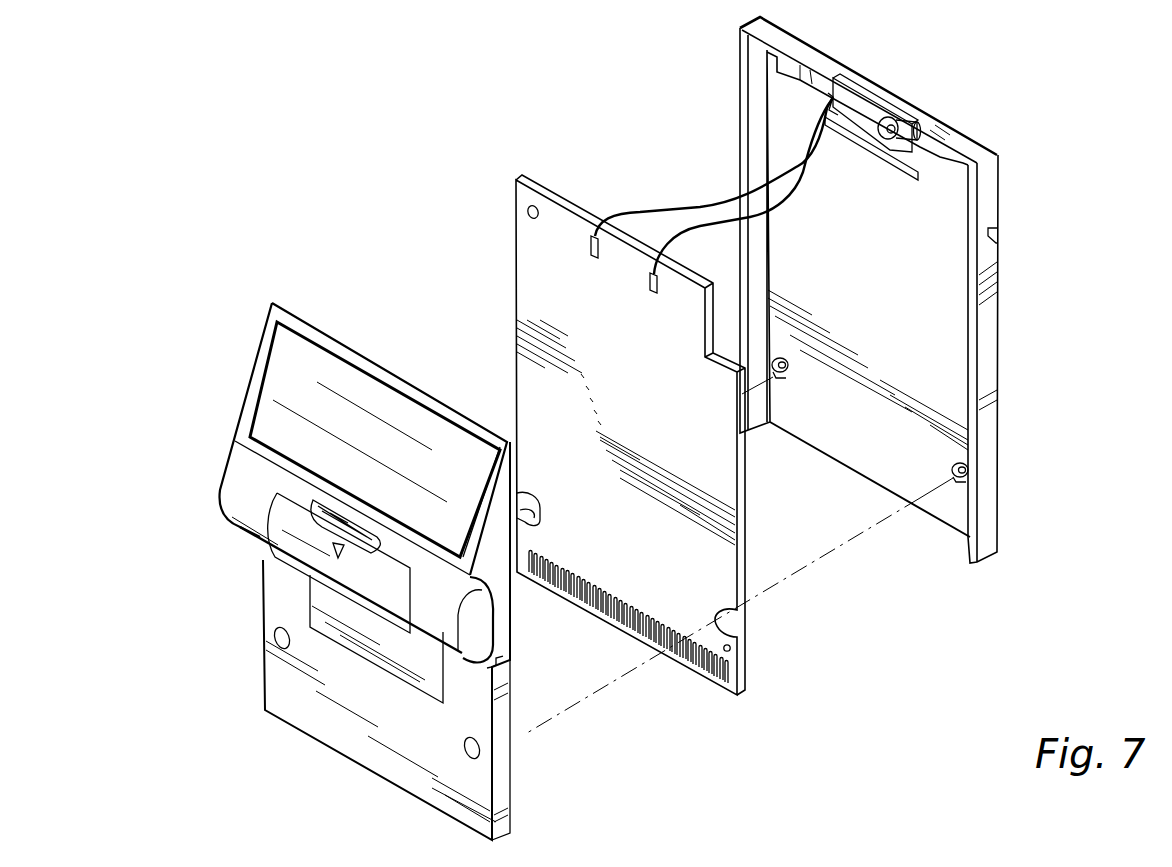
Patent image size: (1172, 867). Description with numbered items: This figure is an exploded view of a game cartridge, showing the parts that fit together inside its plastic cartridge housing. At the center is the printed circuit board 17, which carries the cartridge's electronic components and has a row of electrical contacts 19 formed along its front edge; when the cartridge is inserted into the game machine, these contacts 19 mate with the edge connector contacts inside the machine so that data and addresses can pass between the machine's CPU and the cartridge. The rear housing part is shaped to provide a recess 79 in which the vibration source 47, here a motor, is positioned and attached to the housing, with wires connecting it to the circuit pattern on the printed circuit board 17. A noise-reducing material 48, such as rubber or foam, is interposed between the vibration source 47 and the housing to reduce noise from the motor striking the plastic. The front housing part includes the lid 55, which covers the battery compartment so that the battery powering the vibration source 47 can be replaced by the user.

The printed circuit board 17 is at (540, 292).
The electrical contacts 19 is at (700, 672).
The vibration source 47 is at (918, 112).
The noise-reducing material 48 is at (867, 105).
The lid 55 is at (310, 548).
The recess 79 is at (827, 61).